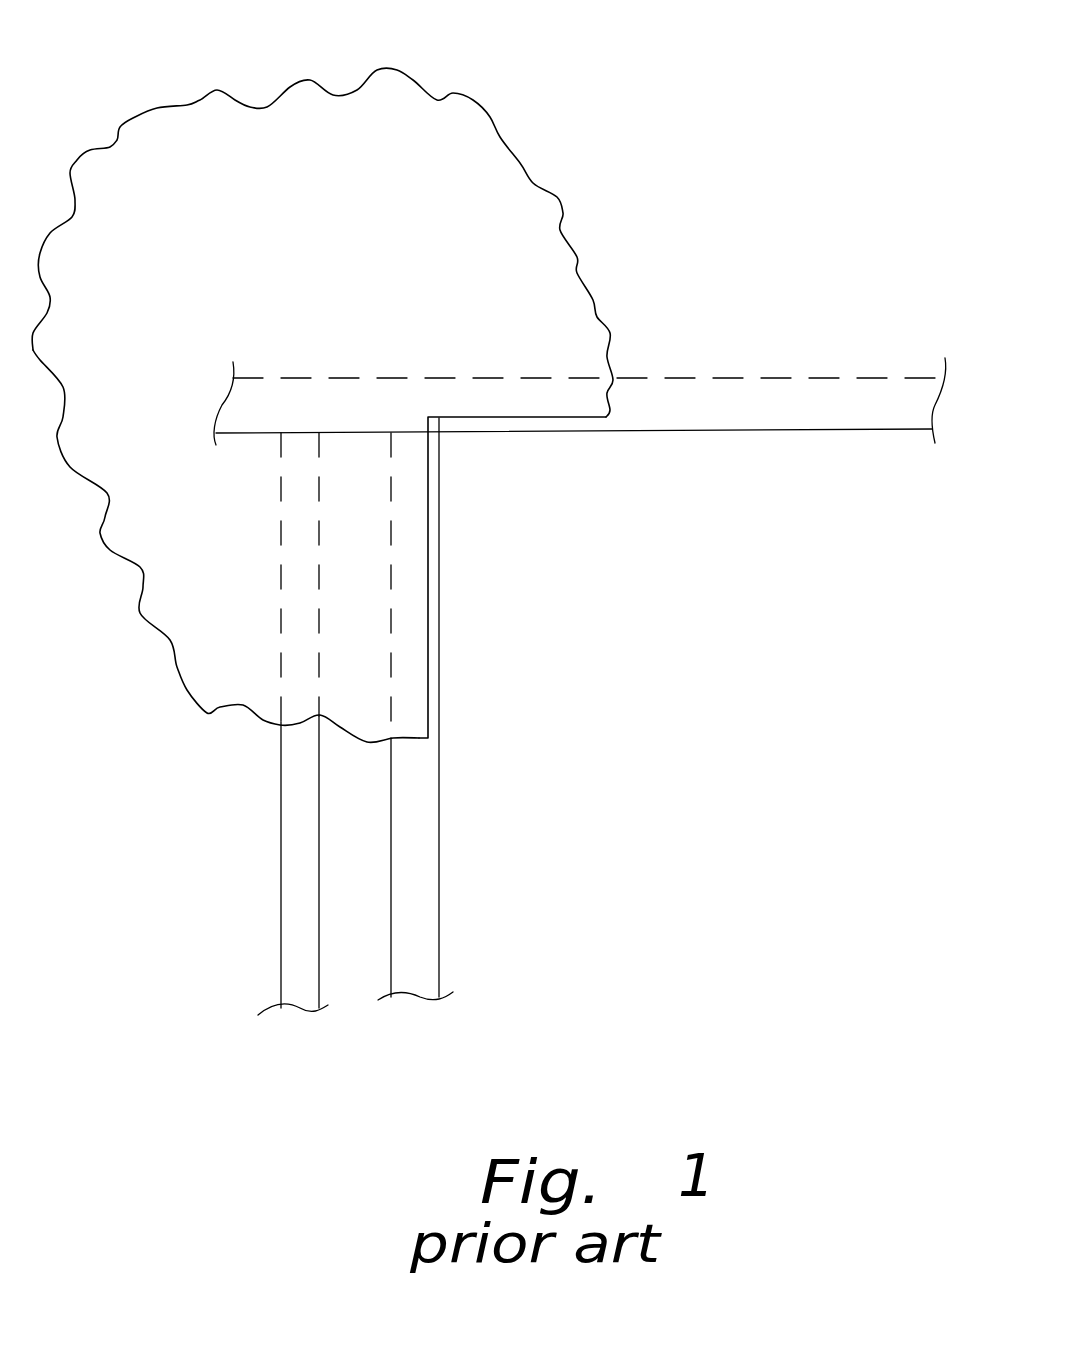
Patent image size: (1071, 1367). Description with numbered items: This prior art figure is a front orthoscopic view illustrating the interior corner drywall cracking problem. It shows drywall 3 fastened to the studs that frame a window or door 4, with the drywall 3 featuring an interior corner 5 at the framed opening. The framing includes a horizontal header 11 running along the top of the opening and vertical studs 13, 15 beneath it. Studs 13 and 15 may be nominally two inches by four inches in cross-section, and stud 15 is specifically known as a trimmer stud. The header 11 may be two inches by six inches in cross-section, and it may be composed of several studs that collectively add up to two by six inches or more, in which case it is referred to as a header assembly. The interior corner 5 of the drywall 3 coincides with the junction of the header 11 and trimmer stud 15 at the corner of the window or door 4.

The drywall 3 is at (205, 170).
The window or door 4 is at (812, 641).
The interior corner 5 is at (408, 382).
The header 11 is at (765, 405).
The stud 13 is at (300, 869).
The trimmer stud 15 is at (428, 806).